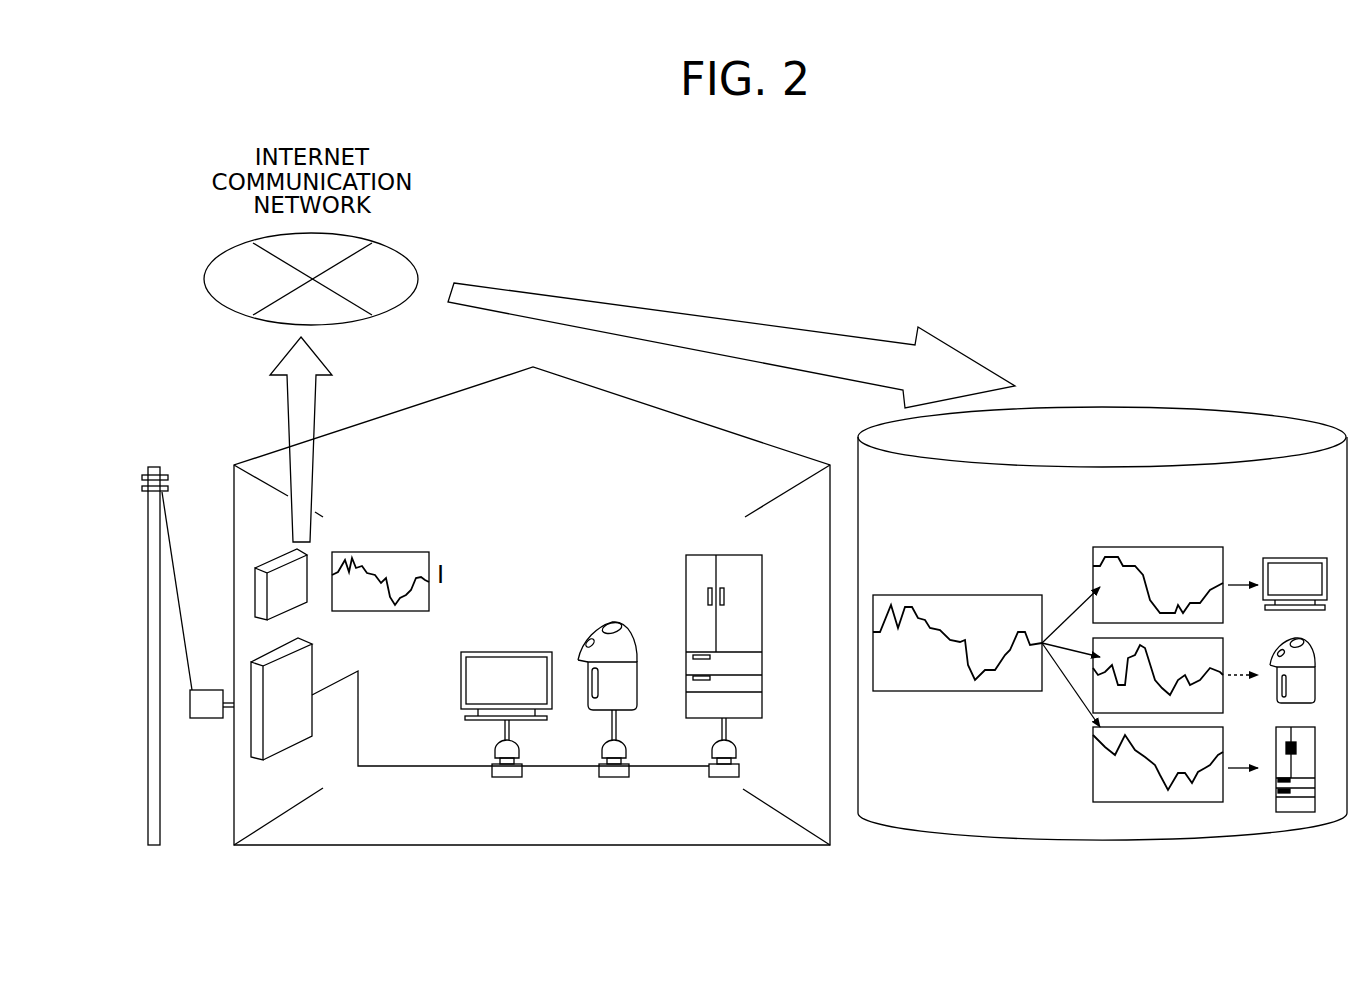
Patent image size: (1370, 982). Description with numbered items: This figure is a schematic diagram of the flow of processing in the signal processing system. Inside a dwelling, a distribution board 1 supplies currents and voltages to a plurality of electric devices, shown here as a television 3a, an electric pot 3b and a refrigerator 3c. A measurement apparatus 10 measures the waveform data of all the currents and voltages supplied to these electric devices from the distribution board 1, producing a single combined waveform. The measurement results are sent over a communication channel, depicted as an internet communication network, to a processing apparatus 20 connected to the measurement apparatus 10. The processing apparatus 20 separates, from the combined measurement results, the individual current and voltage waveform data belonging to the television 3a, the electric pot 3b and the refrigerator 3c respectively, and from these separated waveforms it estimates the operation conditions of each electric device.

The distribution board 1 is at (301, 753).
The measurement apparatus 10 is at (268, 550).
The television 3a is at (512, 638).
The electric pot 3b is at (616, 605).
The refrigerator 3c is at (712, 545).
The processing apparatus 20 is at (1245, 400).